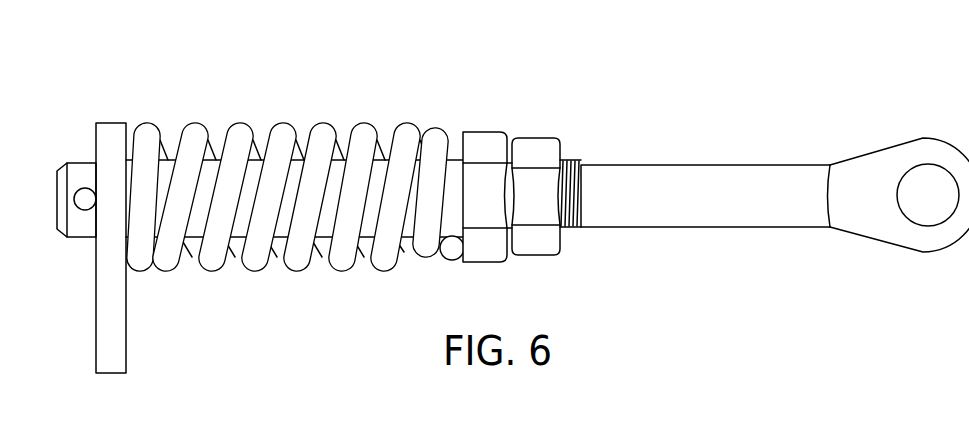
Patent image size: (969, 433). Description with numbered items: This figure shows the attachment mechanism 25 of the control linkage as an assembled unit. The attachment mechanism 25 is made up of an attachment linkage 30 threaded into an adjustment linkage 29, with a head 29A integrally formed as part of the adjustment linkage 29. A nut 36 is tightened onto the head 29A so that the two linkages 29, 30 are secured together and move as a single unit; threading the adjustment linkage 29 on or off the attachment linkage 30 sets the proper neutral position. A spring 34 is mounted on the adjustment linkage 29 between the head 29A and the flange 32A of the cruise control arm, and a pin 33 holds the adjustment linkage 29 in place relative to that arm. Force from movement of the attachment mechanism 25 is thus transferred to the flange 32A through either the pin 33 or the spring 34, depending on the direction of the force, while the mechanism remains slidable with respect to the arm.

The attachment mechanism 25 is at (484, 202).
The adjustment linkage 29 is at (77, 164).
The head 29A is at (482, 132).
The attachment linkage 30 is at (705, 228).
The flange 32A is at (127, 308).
The pin 33 is at (84, 198).
The spring 34 is at (272, 123).
The nut 36 is at (537, 256).